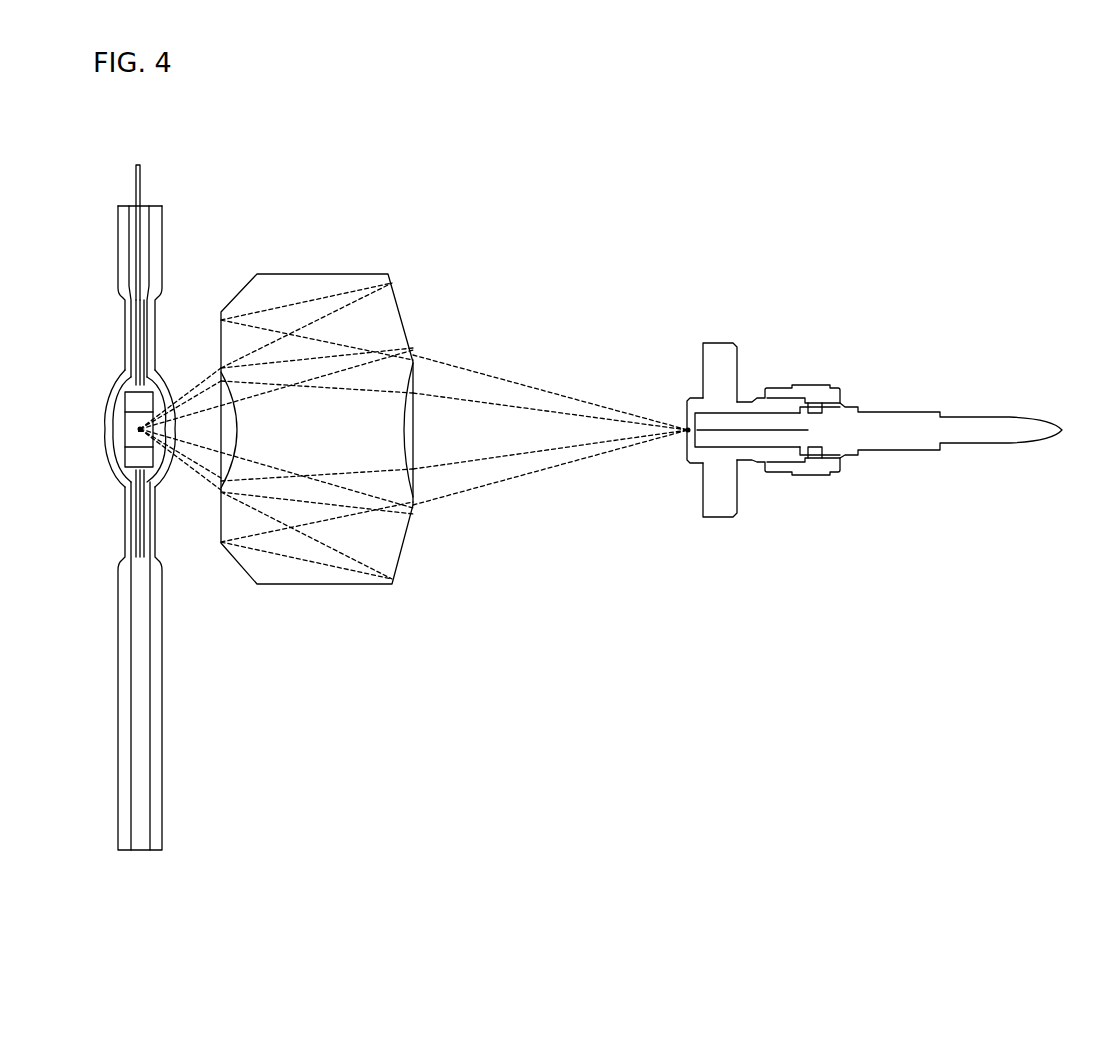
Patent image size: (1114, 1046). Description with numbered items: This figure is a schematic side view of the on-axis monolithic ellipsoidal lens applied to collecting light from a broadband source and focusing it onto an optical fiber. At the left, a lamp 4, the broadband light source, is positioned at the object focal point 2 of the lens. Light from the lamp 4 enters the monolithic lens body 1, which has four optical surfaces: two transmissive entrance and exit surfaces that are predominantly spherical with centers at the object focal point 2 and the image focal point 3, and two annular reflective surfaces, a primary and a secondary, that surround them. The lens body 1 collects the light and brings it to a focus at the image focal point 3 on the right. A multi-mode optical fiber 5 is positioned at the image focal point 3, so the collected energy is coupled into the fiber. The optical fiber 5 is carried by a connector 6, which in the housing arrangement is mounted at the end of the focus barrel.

The lens body 1 is at (352, 590).
The object focal point 2 is at (143, 436).
The image focal point 3 is at (688, 430).
The lamp 4 is at (124, 385).
The multi-mode optical fiber 5 is at (910, 438).
The connector 6 is at (722, 518).